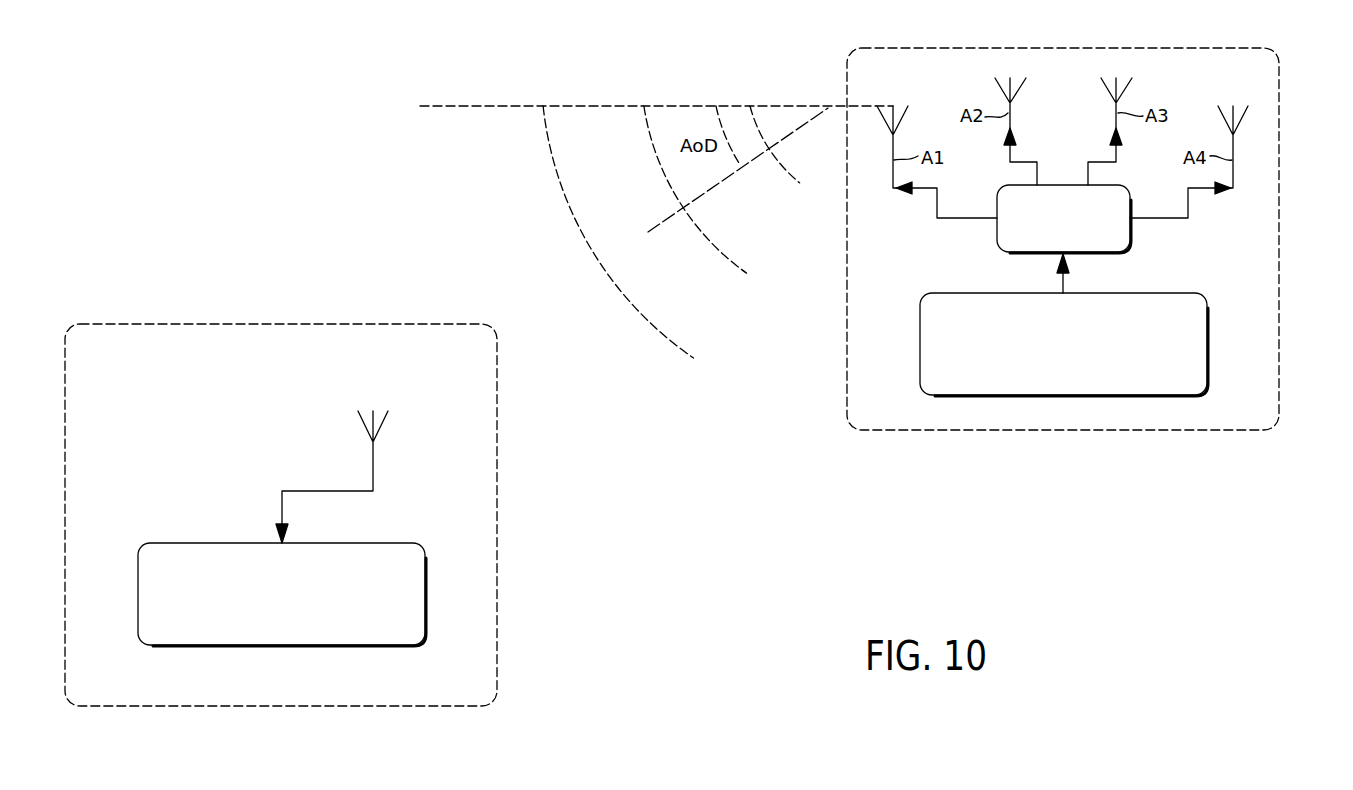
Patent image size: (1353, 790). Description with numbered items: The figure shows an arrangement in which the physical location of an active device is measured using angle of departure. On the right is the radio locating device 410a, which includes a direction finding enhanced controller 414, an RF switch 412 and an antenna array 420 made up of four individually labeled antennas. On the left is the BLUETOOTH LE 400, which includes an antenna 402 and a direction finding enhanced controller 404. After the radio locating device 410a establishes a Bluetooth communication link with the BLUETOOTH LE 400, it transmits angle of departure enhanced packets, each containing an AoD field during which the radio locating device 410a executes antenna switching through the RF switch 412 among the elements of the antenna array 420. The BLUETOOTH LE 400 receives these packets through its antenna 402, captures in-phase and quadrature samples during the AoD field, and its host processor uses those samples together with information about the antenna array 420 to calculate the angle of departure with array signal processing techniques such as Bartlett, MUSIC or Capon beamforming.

The BLUETOOTH LE 400 is at (498, 510).
The antenna 402 is at (375, 466).
The direction finding enhanced controller 404 is at (200, 543).
The radio locating device 410a is at (1279, 237).
The RF switch 412 is at (1133, 237).
The direction finding enhanced controller 414 is at (918, 345).
The antenna array 420 is at (1002, 71).